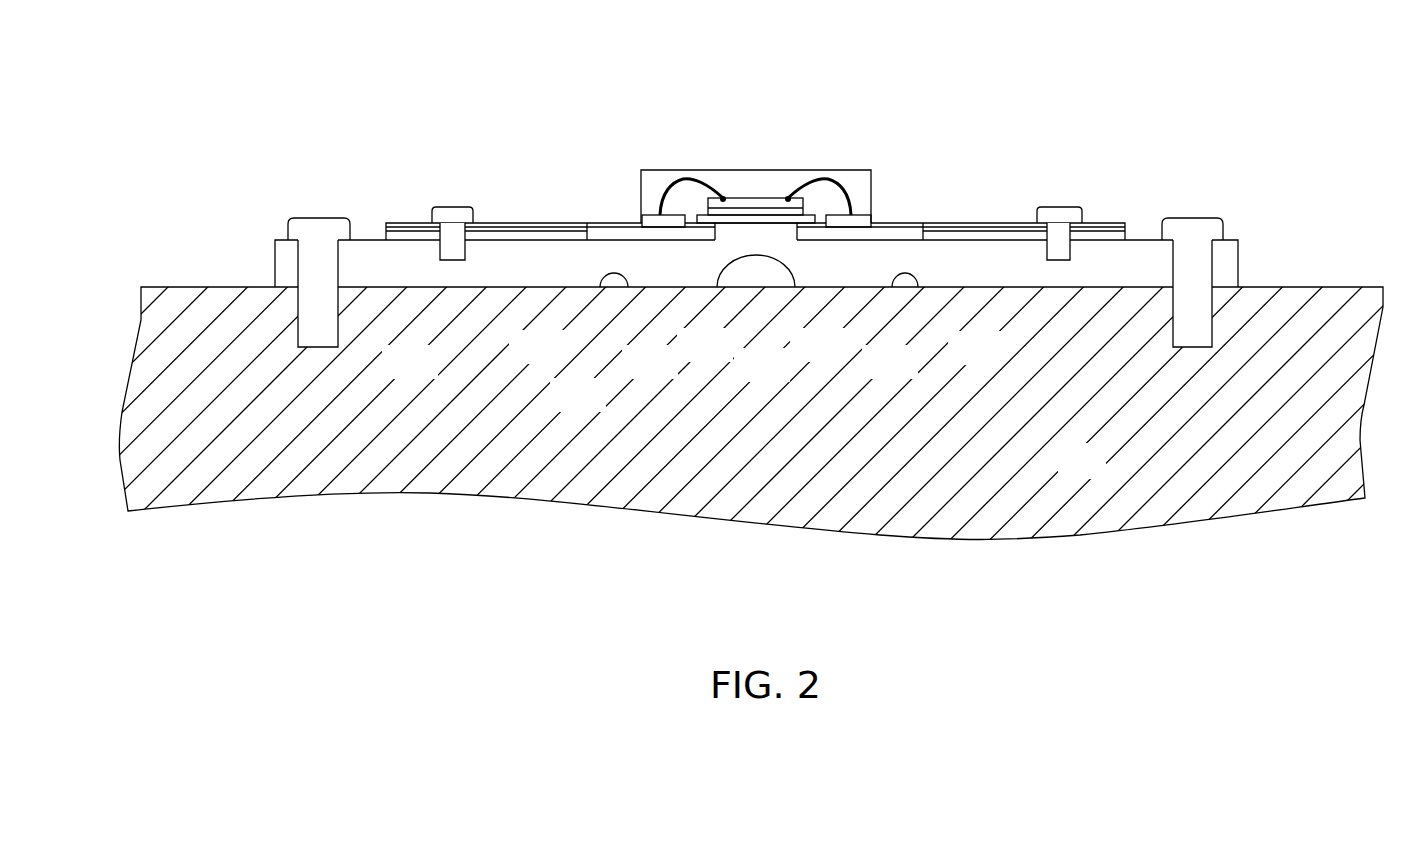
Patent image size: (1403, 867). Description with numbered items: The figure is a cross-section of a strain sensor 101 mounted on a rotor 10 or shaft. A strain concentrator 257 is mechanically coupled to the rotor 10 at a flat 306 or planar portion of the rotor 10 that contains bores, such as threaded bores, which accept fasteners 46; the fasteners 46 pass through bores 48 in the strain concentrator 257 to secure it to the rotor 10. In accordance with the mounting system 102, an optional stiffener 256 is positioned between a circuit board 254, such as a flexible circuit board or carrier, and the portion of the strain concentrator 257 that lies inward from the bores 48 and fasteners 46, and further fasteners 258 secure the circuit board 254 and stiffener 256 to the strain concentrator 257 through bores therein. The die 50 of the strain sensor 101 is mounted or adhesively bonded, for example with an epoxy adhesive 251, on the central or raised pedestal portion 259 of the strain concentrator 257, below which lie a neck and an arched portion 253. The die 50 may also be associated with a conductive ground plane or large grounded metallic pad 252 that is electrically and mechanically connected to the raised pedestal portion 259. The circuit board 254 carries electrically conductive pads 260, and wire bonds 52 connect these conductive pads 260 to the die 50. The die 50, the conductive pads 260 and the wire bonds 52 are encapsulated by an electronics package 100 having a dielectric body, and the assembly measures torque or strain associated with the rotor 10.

The rotor 10 is at (1065, 474).
The fasteners 46 is at (312, 235).
The bores 48 is at (1227, 238).
The die 50 is at (743, 198).
The wire bonds 52 is at (660, 187).
The electronics package 100 is at (802, 177).
The strain sensor 101 is at (715, 148).
The mounting system 102 is at (408, 192).
The adhesive 251 is at (752, 212).
The grounded metallic pad 252 is at (718, 220).
The arched portion 253 is at (728, 270).
The circuit board 254 is at (560, 222).
The stiffener 256 is at (413, 237).
The strain concentrator 257 is at (1147, 238).
The fasteners 258 is at (453, 222).
The central pedestal portion 259 is at (763, 237).
The electrically conductive pads 260 is at (648, 210).
The flat 306 is at (602, 288).